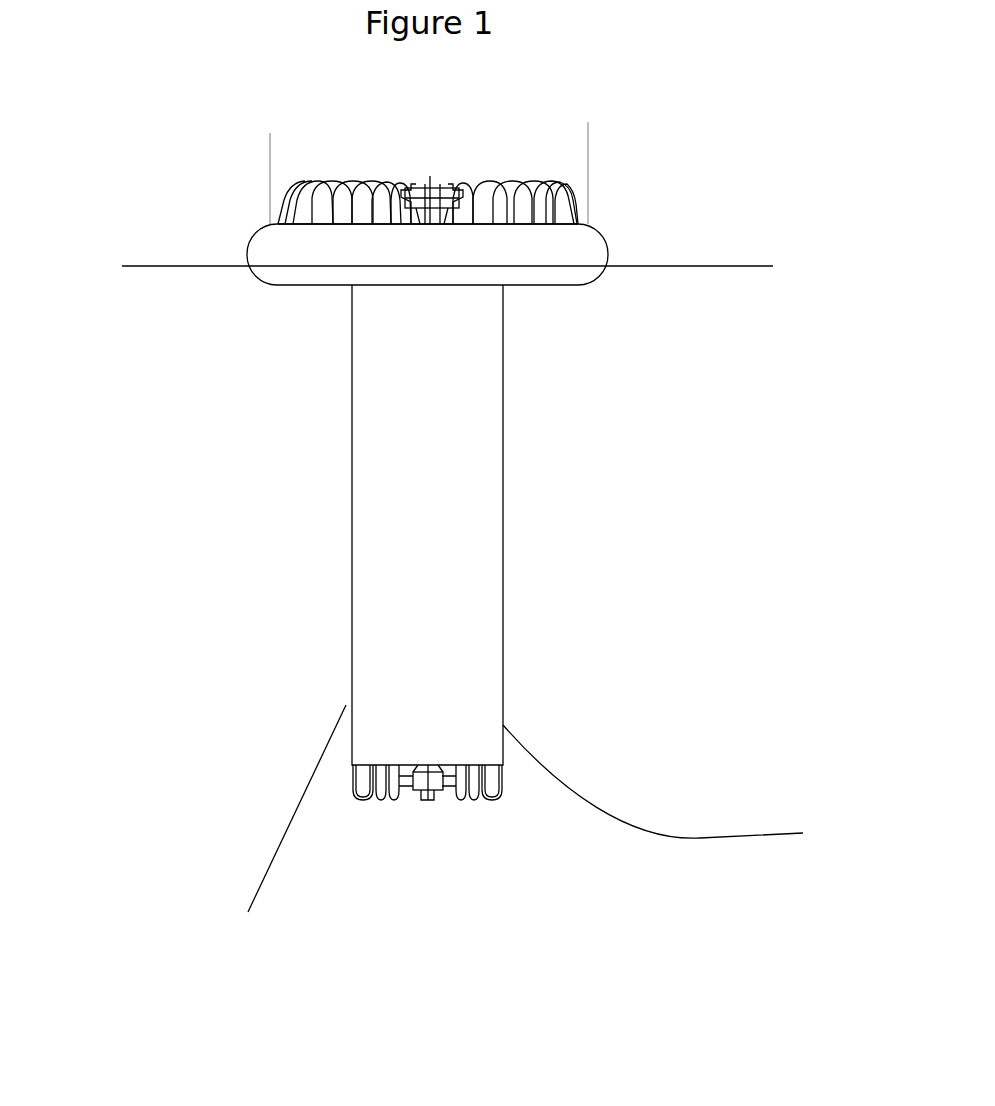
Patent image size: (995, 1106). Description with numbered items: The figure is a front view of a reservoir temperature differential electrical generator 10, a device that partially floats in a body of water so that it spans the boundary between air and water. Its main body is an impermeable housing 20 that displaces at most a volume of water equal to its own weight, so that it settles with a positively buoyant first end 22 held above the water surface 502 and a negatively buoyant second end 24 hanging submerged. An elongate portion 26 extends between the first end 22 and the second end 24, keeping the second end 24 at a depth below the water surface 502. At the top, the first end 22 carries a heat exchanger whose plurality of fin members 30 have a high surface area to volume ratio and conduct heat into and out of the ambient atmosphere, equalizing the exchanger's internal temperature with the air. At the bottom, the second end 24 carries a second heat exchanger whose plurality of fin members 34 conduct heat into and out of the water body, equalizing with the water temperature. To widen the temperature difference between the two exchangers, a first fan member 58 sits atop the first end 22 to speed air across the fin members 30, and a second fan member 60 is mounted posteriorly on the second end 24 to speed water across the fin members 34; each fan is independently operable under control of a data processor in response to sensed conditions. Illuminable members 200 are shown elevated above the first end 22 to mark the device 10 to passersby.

The reservoir temperature differential electrical generator 10 is at (766, 124).
The impermeable housing 20 is at (158, 426).
The positively buoyant first end 22 is at (249, 234).
The negatively buoyant second end 24 is at (509, 751).
The elongate portion 26 is at (503, 538).
The fin members 30 is at (522, 177).
The fin members 34 is at (367, 800).
The first fan member 58 is at (431, 180).
The second fan member 60 is at (433, 796).
The illuminable members 200 is at (268, 131).
The water surface 502 is at (153, 265).